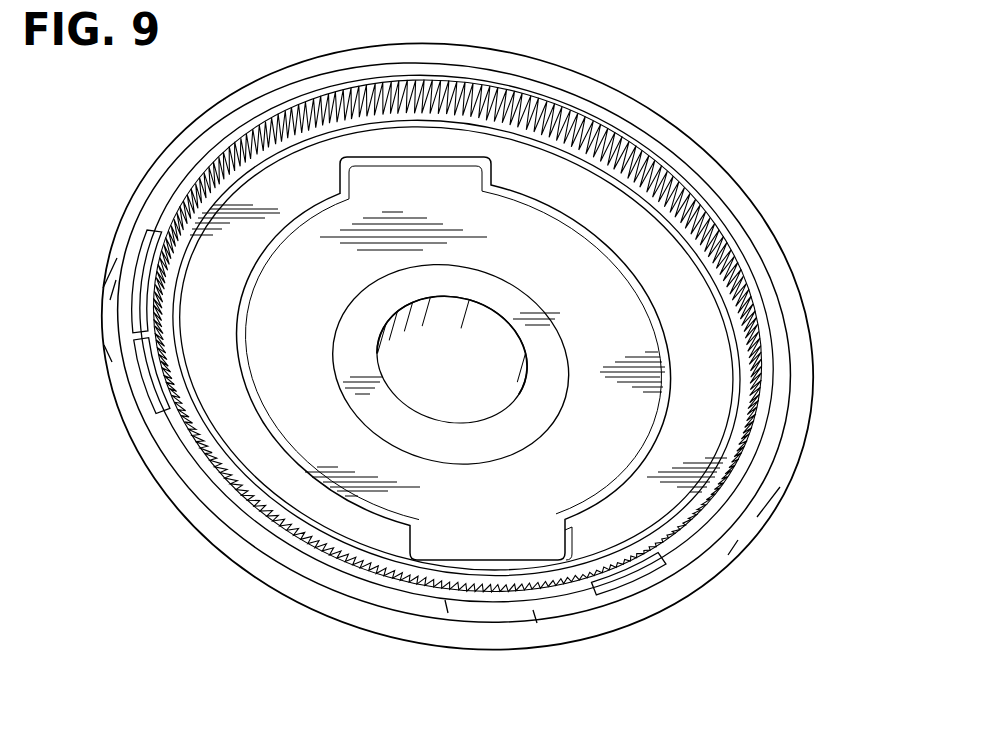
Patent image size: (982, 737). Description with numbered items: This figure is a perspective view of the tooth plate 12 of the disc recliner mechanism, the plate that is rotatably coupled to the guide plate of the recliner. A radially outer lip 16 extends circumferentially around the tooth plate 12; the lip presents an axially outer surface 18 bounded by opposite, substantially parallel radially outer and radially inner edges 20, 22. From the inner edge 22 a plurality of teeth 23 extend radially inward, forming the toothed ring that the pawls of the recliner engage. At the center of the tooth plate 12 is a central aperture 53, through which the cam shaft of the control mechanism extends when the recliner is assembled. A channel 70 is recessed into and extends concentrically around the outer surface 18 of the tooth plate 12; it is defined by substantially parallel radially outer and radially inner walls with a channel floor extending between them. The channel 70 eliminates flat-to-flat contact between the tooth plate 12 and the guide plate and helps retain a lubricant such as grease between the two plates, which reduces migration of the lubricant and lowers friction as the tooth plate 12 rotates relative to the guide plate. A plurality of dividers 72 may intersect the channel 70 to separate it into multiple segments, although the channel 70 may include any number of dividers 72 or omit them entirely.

The tooth plate 12 is at (820, 333).
The radially outer lip 16 is at (131, 210).
The axially outer surface 18 is at (649, 597).
The radially outer edge 20 is at (540, 633).
The radially inner edge 22 is at (572, 103).
The teeth 23 is at (626, 166).
The central aperture 53 is at (487, 386).
The channel 70 is at (746, 497).
The dividers 72 is at (667, 566).